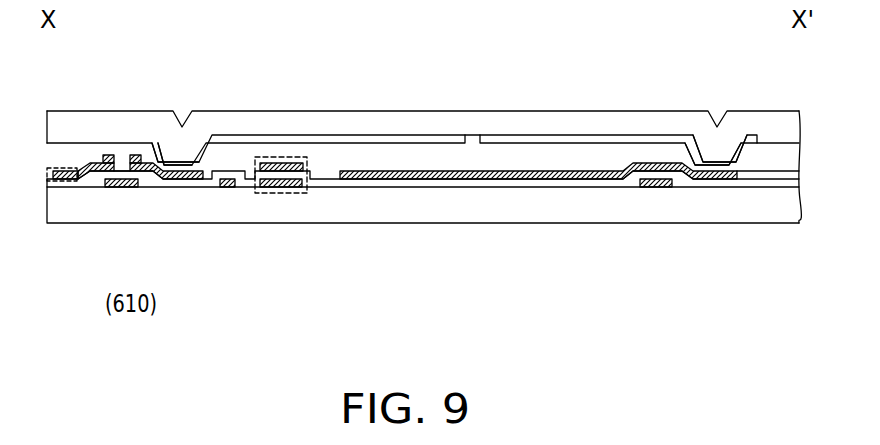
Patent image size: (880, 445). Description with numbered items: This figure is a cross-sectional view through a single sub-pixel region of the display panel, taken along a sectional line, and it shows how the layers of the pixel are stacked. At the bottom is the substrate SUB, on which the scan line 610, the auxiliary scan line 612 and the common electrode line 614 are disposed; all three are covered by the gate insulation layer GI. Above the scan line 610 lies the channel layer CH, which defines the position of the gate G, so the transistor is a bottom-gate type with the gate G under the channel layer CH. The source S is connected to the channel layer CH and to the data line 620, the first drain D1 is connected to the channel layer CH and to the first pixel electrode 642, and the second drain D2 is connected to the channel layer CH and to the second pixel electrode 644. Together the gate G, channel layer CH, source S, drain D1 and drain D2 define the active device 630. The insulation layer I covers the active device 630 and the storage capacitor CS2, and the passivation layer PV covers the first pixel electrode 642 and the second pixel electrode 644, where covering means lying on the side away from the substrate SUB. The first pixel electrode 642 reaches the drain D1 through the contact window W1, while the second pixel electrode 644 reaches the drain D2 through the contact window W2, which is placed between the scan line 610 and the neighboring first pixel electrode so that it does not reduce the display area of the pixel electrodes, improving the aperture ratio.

The data line 620 is at (47, 172).
The source S is at (107, 155).
The channel layer CH is at (122, 165).
The first drain D1 is at (136, 155).
The contact window W1 is at (162, 150).
The first pixel electrode 642 is at (283, 143).
The second pixel electrode 644 is at (598, 142).
The contact window W2 is at (700, 152).
The substrate SUB is at (72, 205).
The gate G is at (120, 187).
The active device 630 is at (153, 229).
The auxiliary scan line 612 is at (227, 188).
The common electrode line 614 is at (280, 193).
The storage capacitor CS2 is at (297, 193).
The gate insulation layer GI is at (335, 183).
The insulation layer I is at (450, 160).
The second drain D2 is at (508, 181).
The passivation layer PV is at (557, 127).
The scan line 610 is at (653, 187).